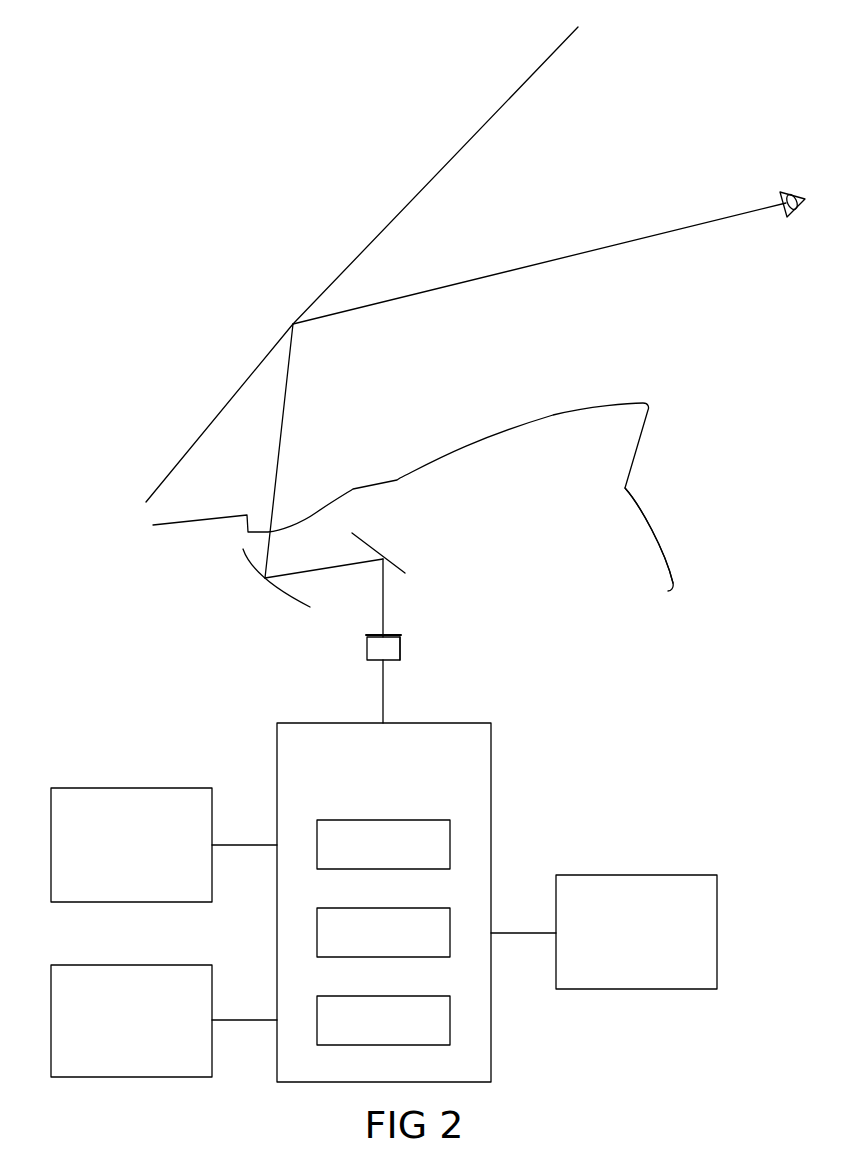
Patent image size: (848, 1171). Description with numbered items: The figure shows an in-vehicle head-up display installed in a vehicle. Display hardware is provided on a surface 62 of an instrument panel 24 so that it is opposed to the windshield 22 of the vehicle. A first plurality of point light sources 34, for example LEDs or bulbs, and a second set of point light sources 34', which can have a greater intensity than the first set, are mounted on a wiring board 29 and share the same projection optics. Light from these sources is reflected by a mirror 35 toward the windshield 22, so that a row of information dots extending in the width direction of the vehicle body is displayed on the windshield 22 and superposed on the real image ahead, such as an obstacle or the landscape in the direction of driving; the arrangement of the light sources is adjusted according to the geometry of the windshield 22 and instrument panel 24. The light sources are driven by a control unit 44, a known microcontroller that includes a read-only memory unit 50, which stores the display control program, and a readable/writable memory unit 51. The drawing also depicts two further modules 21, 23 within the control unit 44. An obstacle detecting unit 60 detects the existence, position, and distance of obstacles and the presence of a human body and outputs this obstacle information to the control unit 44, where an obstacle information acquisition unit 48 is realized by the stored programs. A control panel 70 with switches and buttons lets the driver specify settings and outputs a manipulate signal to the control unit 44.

The windshield 22 is at (409, 190).
The surface of the instrument panel 62 is at (397, 479).
The instrument panel 24 is at (658, 540).
The mirror 35 is at (282, 589).
The point light sources 34 is at (355, 641).
The point light sources 34' is at (430, 649).
The wiring board 29 is at (367, 657).
The control unit 44 is at (491, 805).
The first processing module 21 is at (410, 799).
The third processing module 23 is at (383, 1005).
The read-only memory unit 50 is at (383, 932).
The readable/writable memory unit 51 is at (383, 1020).
The obstacle detecting unit 60 is at (119, 857).
The obstacle information acquisition unit 48 is at (119, 1032).
The control panel 70 is at (625, 943).